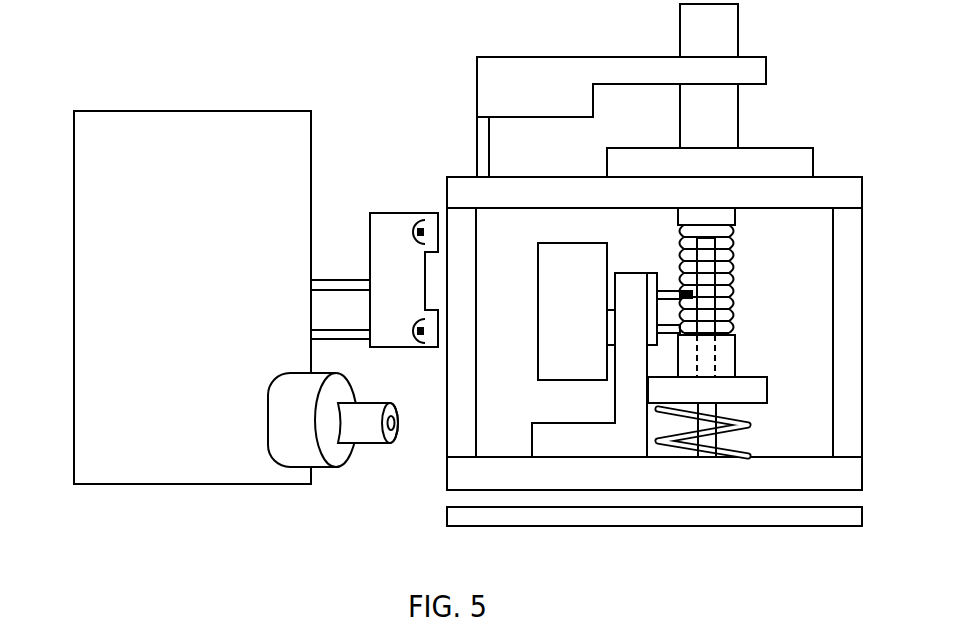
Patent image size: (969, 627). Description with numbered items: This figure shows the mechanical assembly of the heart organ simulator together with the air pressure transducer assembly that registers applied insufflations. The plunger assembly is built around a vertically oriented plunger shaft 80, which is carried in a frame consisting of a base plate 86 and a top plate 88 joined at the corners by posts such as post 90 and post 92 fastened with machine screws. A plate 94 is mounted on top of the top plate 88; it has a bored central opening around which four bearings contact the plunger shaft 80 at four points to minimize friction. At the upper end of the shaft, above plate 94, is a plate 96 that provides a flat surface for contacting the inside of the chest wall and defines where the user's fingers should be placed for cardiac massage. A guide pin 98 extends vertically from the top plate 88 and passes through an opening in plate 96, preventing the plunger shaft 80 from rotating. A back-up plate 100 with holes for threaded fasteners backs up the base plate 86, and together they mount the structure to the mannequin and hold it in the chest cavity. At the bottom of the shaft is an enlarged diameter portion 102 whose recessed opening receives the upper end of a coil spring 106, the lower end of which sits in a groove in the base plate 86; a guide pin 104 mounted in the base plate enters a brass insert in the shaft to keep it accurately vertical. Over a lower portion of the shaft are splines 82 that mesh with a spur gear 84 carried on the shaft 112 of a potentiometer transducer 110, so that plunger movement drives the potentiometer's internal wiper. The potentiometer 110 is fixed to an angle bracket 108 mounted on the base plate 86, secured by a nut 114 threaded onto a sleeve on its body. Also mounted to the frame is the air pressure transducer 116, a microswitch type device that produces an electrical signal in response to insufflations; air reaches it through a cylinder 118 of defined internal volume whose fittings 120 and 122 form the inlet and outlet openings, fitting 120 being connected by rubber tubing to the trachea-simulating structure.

The plunger shaft 80 is at (724, 104).
The splines 82 is at (735, 283).
The spur gear 84 is at (710, 257).
The base plate 86 is at (848, 474).
The top plate 88 is at (850, 197).
The post 90 is at (848, 277).
The post 92 is at (466, 257).
The plate 94 is at (803, 160).
The plate 96 is at (652, 63).
The guide pin 98 is at (486, 151).
The back-up plate 100 is at (850, 517).
The enlarged diameter portion 102 is at (756, 386).
The guide pin 104 is at (712, 442).
The coil spring 106 is at (752, 424).
The angle bracket 108 is at (558, 433).
The potentiometer transducer 110 is at (550, 325).
The shaft 112 is at (677, 292).
The nut 114 is at (650, 275).
The air pressure transducer 116 is at (397, 233).
The cylinder 118 is at (82, 183).
The fitting 120 is at (338, 455).
The fitting 122 is at (356, 288).